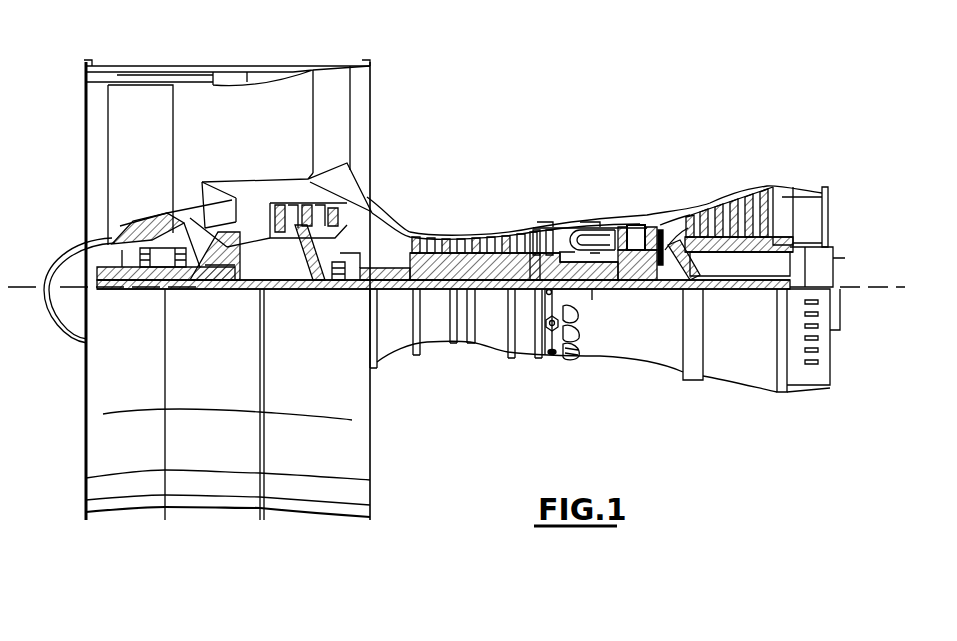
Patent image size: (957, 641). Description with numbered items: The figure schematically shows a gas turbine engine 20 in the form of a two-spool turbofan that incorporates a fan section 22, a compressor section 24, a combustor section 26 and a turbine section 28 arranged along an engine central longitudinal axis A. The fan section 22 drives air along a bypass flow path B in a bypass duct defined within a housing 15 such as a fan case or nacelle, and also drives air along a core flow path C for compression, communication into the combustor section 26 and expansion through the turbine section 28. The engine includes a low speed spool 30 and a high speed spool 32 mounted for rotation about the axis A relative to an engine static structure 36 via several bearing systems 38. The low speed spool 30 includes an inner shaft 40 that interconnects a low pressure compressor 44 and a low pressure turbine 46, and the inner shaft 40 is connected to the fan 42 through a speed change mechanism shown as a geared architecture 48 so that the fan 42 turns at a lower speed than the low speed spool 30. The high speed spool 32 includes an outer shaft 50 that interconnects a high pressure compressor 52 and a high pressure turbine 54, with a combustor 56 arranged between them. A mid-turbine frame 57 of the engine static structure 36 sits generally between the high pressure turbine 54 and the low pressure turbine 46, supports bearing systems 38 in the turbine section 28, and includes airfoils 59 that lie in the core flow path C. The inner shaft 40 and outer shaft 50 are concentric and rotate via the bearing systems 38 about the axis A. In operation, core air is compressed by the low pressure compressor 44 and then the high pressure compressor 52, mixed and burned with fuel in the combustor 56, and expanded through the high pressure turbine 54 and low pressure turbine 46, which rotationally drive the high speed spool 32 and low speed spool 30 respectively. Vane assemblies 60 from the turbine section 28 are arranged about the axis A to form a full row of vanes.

The gas turbine engine 20 is at (596, 98).
The fan section 22 is at (172, 58).
The housing 15 is at (228, 72).
The fan 42 is at (158, 167).
The bypass flow path B is at (195, 125).
The core flow path C is at (222, 204).
The compressor section 24 is at (410, 206).
The combustor section 26 is at (585, 196).
The turbine section 28 is at (715, 160).
The low speed spool 30 is at (492, 300).
The high speed spool 32 is at (530, 238).
The engine static structure 36 is at (523, 362).
The bearing systems 38 is at (340, 281).
The inner shaft 40 is at (387, 290).
The low pressure compressor 44 is at (318, 215).
The low pressure turbine 46 is at (733, 195).
The geared architecture 48 is at (236, 275).
The outer shaft 50 is at (592, 288).
The high pressure compressor 52 is at (477, 238).
The high pressure turbine 54 is at (637, 225).
The combustor 56 is at (582, 241).
The mid-turbine frame 57 is at (675, 208).
The airfoils 59 is at (695, 256).
The vane assemblies 60 is at (663, 237).
The engine central longitudinal axis A is at (892, 287).